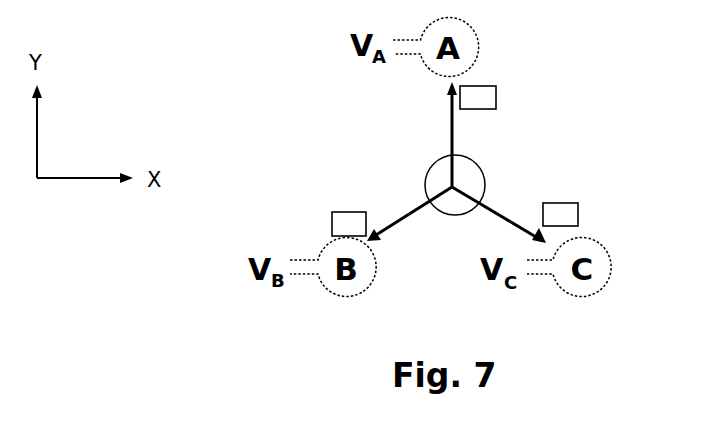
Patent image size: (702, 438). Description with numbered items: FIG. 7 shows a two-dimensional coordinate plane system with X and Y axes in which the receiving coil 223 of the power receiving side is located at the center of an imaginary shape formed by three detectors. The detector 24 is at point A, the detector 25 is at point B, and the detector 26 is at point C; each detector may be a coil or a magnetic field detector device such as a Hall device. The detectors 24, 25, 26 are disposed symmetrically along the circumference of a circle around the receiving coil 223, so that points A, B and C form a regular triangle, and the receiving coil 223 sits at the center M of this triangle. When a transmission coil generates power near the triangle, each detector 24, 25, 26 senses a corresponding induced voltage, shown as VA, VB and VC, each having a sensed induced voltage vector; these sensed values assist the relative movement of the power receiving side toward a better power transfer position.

The detector 24 is at (496, 96).
The detector 25 is at (332, 219).
The detector 26 is at (578, 212).
The receiving coil 223 is at (468, 162).
The center M is at (452, 188).